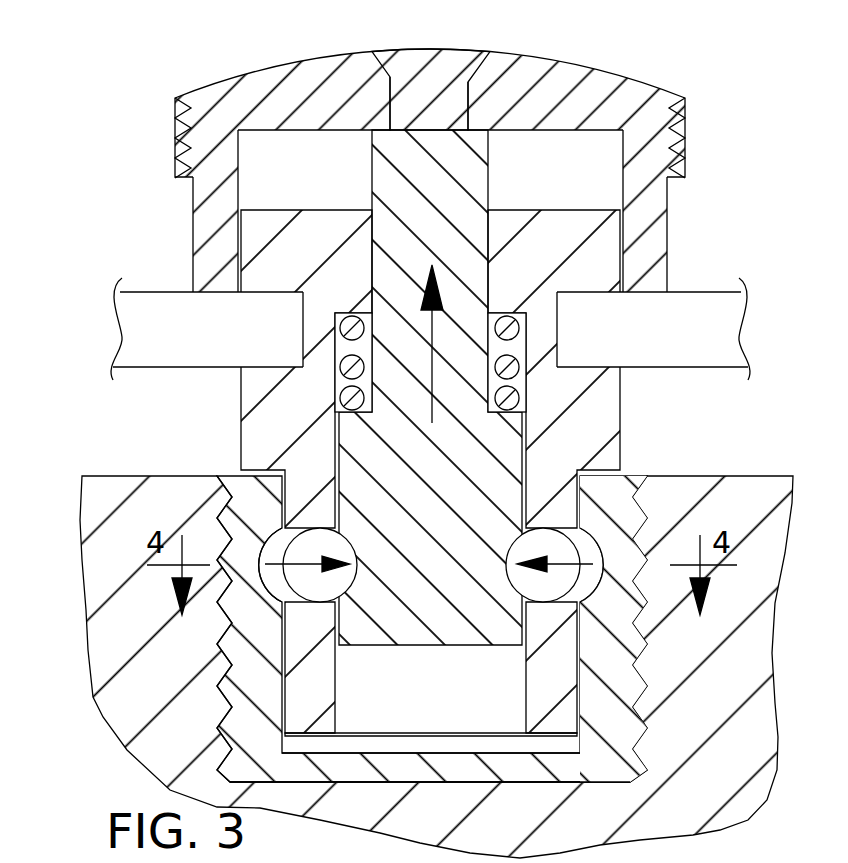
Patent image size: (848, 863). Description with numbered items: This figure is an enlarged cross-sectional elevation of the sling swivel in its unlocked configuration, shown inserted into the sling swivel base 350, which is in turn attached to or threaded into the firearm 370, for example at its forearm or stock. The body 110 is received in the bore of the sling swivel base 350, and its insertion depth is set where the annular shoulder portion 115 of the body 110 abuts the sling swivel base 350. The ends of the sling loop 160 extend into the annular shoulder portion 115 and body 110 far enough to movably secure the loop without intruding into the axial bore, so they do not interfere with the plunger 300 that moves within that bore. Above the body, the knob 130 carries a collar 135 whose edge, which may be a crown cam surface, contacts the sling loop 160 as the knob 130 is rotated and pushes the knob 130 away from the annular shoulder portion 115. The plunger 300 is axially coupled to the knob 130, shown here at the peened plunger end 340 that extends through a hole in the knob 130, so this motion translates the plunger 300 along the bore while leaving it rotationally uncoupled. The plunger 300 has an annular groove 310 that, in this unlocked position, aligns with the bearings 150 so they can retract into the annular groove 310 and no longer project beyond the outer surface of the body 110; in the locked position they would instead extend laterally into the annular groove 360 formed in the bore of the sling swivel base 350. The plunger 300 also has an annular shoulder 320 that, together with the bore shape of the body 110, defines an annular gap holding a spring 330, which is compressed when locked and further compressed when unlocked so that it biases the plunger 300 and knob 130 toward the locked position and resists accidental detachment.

The body 110 is at (318, 682).
The annular shoulder portion 115 is at (252, 420).
The knob 130 is at (268, 66).
The collar 135 is at (193, 228).
The bearings 150 is at (320, 590).
The sling loop 160 is at (160, 305).
The plunger 300 is at (458, 611).
The annular groove 310 is at (510, 543).
The annular shoulder 320 is at (517, 397).
The spring 330 is at (337, 352).
The plunger head / post 340 is at (417, 55).
The sling swivel base 350 is at (427, 783).
The annular groove 360 is at (588, 535).
The firearm 370 is at (118, 476).